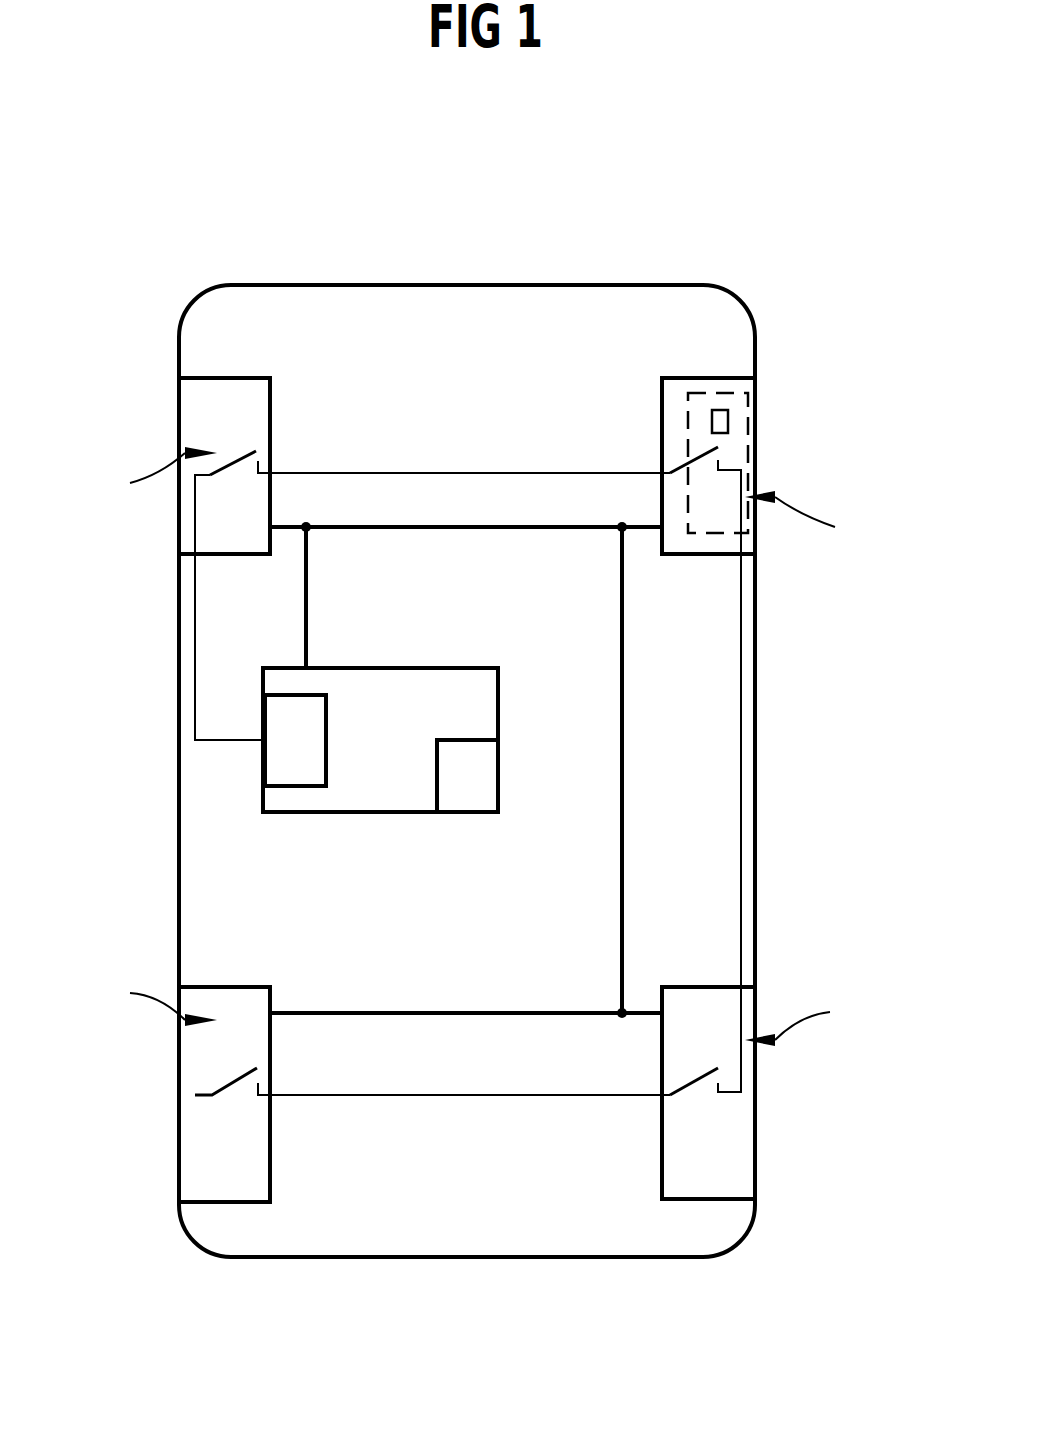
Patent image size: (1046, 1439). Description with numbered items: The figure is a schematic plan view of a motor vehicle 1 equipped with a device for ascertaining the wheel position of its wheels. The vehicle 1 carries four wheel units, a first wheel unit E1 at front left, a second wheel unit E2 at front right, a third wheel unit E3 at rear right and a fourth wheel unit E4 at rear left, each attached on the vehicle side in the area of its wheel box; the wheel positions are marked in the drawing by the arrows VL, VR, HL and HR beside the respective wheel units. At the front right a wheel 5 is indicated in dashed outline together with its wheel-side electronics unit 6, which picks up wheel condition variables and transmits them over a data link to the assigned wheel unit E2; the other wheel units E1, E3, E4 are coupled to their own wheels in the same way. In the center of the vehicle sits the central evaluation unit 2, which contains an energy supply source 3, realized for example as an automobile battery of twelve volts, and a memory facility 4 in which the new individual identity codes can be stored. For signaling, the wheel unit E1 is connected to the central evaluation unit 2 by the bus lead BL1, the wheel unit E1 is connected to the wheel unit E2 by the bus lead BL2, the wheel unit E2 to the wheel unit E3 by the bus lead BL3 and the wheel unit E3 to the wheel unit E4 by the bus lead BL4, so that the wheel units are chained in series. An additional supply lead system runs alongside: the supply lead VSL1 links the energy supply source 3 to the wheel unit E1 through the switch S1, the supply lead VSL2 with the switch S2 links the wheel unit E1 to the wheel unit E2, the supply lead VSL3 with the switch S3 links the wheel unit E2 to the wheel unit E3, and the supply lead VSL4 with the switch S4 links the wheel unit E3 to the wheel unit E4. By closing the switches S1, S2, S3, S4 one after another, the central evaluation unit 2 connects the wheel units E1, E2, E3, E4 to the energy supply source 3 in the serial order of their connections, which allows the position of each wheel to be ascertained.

The motor vehicle 1 is at (612, 320).
The central evaluation unit 2 is at (395, 761).
The energy supply source 3 is at (304, 764).
The memory facility 4 is at (477, 791).
The wheel 5 is at (730, 390).
The electronics unit 6 is at (735, 407).
The first wheel unit E1 is at (198, 400).
The second wheel unit E2 is at (757, 408).
The third wheel unit E3 is at (738, 1143).
The fourth wheel unit E4 is at (200, 1148).
The switch S1 is at (255, 450).
The switch S2 is at (718, 447).
The switch S3 is at (685, 1088).
The switch S4 is at (228, 1078).
The front left wheel VL is at (151, 478).
The front right wheel VR is at (812, 520).
The rear left wheel HL is at (150, 999).
The rear right wheel HR is at (812, 1018).
The bus lead BL1 is at (306, 603).
The bus lead BL2 is at (372, 527).
The bus lead BL3 is at (622, 800).
The bus lead BL4 is at (392, 1013).
The supply lead VSL1 is at (195, 693).
The supply lead VSL2 is at (503, 473).
The supply lead VSL3 is at (741, 693).
The supply lead VSL4 is at (520, 1095).